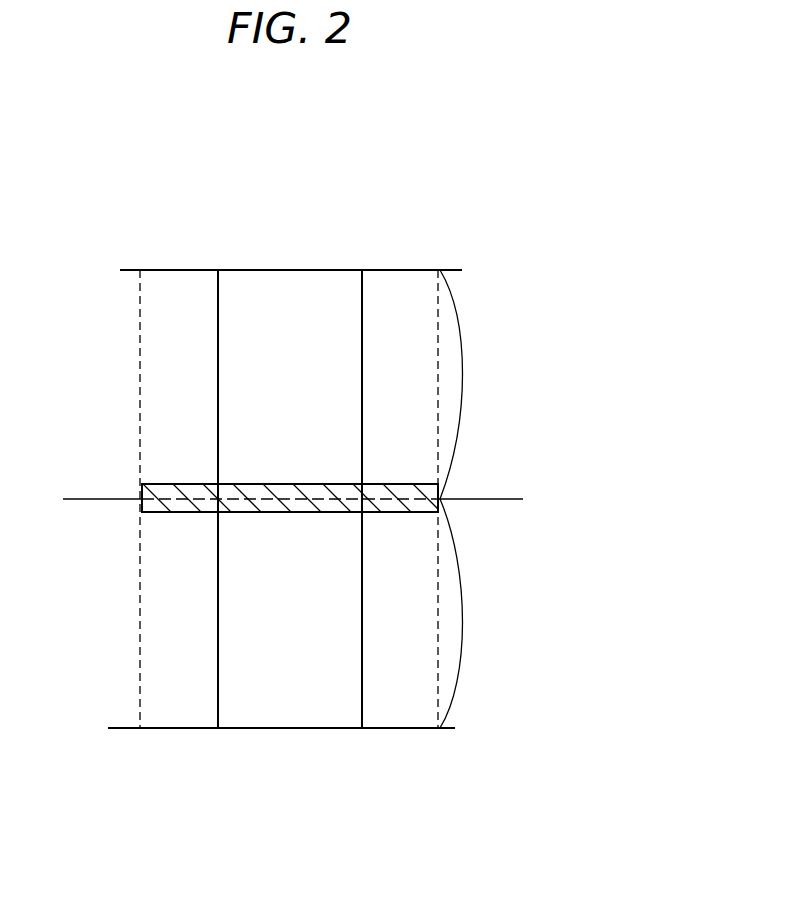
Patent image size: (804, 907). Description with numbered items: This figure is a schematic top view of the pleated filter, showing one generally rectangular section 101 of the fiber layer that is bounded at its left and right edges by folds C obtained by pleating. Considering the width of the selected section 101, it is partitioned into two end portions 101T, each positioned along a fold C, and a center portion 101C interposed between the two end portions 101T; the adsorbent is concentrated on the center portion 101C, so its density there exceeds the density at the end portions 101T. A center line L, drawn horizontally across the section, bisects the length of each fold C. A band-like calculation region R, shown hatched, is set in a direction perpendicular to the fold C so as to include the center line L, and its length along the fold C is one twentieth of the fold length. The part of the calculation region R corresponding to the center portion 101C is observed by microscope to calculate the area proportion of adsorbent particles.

The section 101 is at (333, 168).
The end portion 101T is at (218, 264).
The center portion 101C is at (362, 264).
The calculation region R is at (282, 482).
The center line L is at (490, 499).
The fold C is at (137, 686).